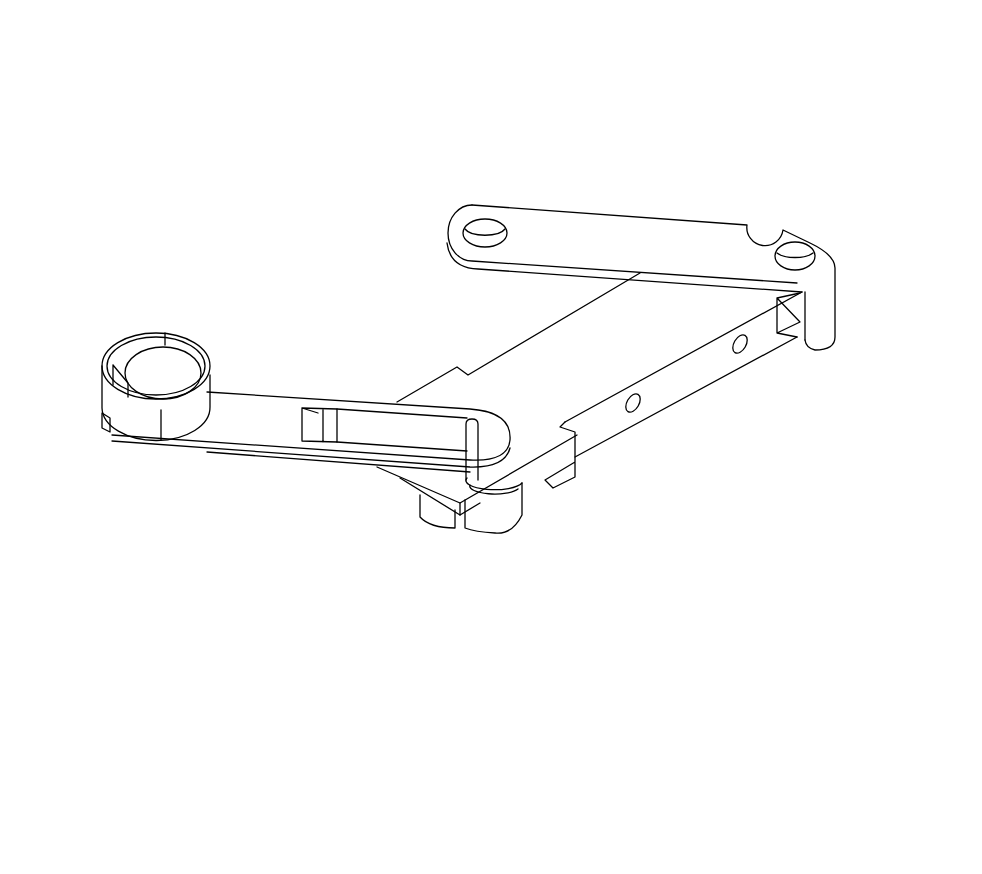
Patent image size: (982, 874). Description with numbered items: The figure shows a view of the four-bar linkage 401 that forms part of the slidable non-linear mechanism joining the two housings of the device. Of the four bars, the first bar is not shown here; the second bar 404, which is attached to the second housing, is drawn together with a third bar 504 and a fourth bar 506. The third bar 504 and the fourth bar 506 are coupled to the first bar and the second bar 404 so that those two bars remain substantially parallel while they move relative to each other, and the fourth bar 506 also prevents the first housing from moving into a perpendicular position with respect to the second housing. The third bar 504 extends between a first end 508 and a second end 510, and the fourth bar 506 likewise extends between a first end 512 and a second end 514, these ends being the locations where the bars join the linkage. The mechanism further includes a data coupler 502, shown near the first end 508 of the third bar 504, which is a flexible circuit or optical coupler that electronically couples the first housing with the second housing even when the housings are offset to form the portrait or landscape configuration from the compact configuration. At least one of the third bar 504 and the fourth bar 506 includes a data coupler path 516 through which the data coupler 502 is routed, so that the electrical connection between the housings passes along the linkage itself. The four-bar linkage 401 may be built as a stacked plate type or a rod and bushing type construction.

The four-bar linkage 401 is at (140, 79).
The second bar 404 is at (688, 397).
The data coupler 502 is at (105, 362).
The third bar 504 is at (269, 395).
The fourth bar 506 is at (618, 216).
The first end 508 is at (108, 430).
The second end 510 is at (480, 480).
The first end 512 is at (447, 219).
The second end 514 is at (810, 243).
The data coupler path 516 is at (348, 445).